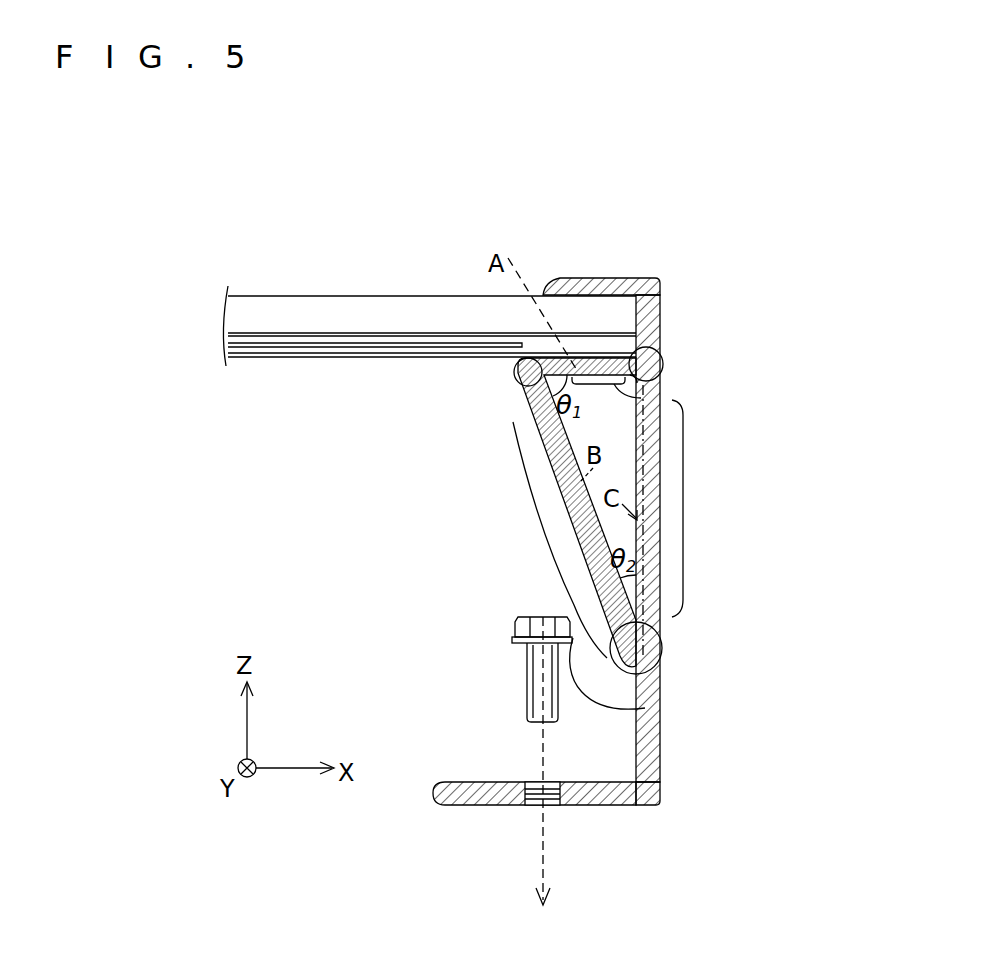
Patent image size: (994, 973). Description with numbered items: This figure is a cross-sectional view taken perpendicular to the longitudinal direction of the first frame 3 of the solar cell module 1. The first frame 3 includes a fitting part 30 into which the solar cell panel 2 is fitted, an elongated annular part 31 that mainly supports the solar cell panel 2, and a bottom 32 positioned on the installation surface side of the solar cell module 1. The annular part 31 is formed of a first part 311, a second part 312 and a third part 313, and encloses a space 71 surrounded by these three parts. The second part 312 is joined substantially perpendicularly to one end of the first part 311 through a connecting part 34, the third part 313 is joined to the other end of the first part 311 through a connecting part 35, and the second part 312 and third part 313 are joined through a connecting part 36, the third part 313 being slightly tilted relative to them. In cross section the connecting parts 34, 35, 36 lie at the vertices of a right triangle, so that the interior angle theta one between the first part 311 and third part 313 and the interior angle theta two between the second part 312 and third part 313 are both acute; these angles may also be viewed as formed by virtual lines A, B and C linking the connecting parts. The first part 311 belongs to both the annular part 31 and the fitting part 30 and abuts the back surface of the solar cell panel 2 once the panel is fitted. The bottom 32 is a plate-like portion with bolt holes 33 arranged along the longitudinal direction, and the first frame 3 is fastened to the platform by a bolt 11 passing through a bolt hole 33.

The solar cell module 1 is at (210, 258).
The solar cell panel 2 is at (383, 290).
The first frame 3 is at (656, 735).
The bolt 11 is at (520, 621).
The fitting part 30 is at (652, 322).
The annular part 31 is at (776, 366).
The first part 311 is at (642, 398).
The second part 312 is at (686, 501).
The third part 313 is at (645, 708).
The bottom 32 is at (598, 805).
The bolt hole 33 is at (530, 812).
The connecting part 34 is at (655, 350).
The connecting part 35 is at (516, 367).
The connecting part 36 is at (662, 641).
The space 71 is at (572, 432).